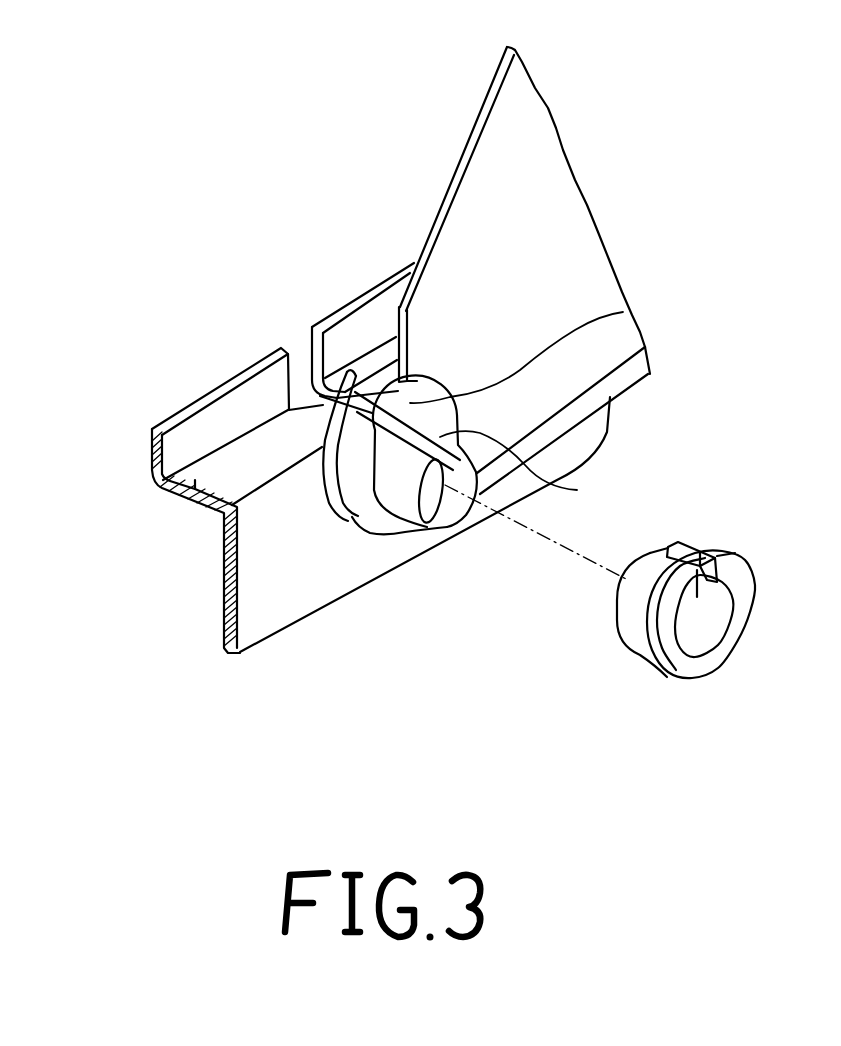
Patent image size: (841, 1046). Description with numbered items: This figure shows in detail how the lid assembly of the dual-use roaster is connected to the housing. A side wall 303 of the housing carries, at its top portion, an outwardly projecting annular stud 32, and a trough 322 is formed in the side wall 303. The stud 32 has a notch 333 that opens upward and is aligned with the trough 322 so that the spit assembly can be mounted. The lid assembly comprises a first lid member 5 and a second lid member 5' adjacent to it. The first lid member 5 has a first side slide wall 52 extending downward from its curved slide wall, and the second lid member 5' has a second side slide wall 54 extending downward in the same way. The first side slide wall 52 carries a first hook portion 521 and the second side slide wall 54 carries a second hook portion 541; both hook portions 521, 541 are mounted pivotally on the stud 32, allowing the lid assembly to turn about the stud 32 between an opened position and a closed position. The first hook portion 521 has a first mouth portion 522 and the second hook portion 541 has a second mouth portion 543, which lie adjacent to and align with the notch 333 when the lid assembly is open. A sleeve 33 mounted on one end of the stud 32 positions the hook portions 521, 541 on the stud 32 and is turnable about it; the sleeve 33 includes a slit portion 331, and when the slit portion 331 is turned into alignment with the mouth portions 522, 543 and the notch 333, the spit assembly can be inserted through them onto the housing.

The first lid member 5 is at (471, 499).
The second lid member 5' is at (633, 227).
The first side slide wall 52 is at (650, 368).
The second side slide wall 54 is at (553, 183).
The second mouth portion 543 is at (623, 312).
The second hook portion 541 is at (392, 527).
The first hook portion 521 is at (330, 478).
The first mouth portion 522 is at (377, 382).
The stud 32 is at (448, 527).
The notch 333 is at (577, 490).
The sleeve 33 is at (713, 672).
The slit portion 331 is at (700, 548).
The trough 322 is at (302, 362).
The side wall 303 is at (282, 607).